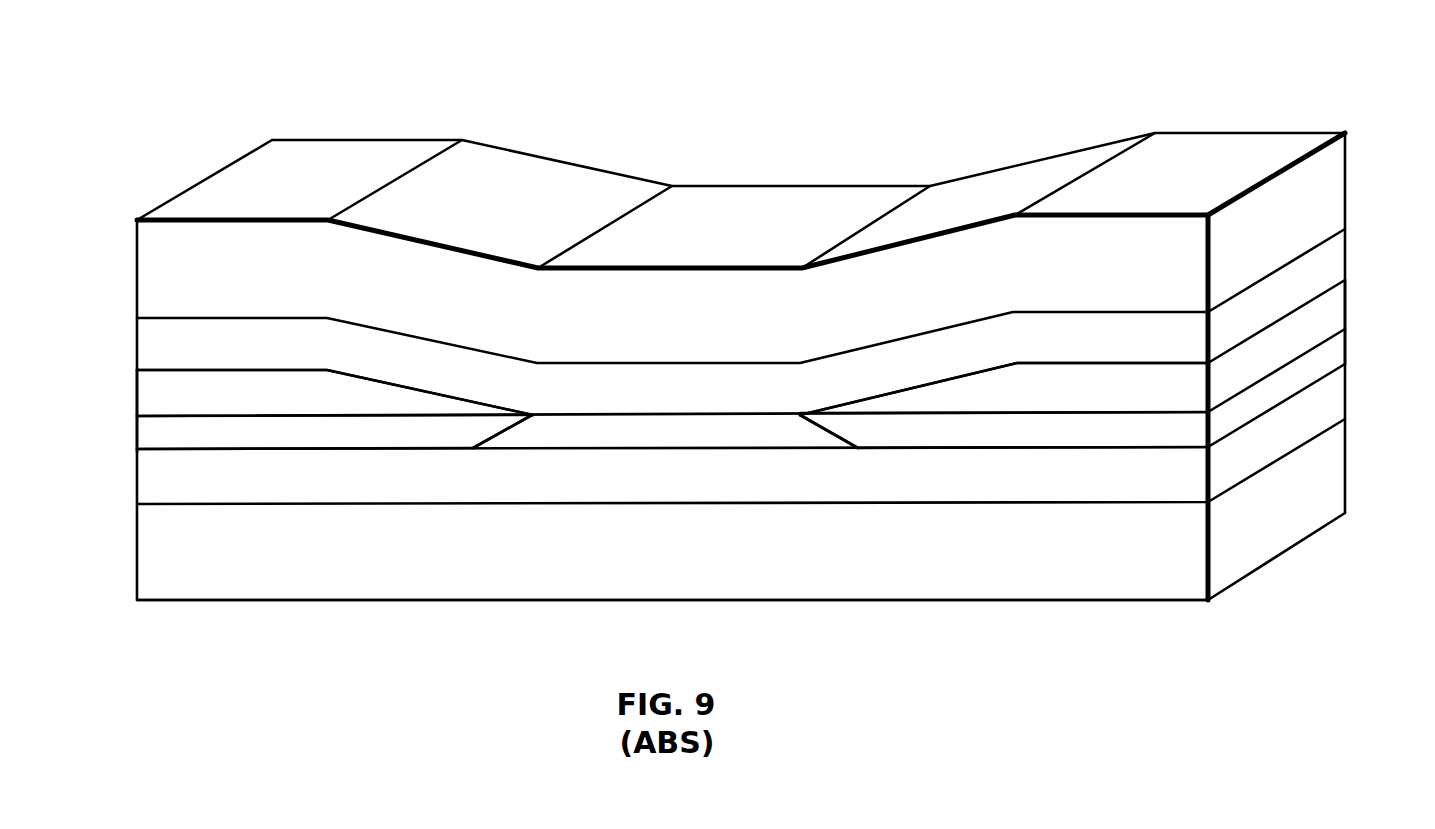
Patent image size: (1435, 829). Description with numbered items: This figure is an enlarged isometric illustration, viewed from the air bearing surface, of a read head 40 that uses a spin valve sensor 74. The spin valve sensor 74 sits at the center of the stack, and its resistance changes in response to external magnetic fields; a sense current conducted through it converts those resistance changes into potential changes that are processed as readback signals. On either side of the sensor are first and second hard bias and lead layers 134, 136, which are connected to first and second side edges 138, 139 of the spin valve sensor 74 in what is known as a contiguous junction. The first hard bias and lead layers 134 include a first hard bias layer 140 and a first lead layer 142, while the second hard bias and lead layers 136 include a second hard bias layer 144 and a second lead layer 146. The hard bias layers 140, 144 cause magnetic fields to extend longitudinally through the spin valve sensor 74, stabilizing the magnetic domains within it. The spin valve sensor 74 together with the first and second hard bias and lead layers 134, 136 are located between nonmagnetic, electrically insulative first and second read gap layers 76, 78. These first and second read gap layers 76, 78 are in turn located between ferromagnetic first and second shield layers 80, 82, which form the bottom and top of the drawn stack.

The read head 40 is at (805, 151).
The spin valve sensor 74 is at (575, 414).
The first read gap layer 76 is at (532, 490).
The second read gap layer 78 is at (428, 355).
The first shield layer 80 is at (253, 580).
The second shield layer 82 is at (572, 183).
The first hard bias and lead layers 134 is at (124, 372).
The second hard bias and lead layers 136 is at (1355, 275).
The first side edge 138 is at (498, 438).
The second side edge 139 is at (845, 437).
The first hard bias layer 140 is at (165, 432).
The first lead layer 142 is at (170, 390).
The second hard bias layer 144 is at (1142, 427).
The second lead layer 146 is at (1147, 390).